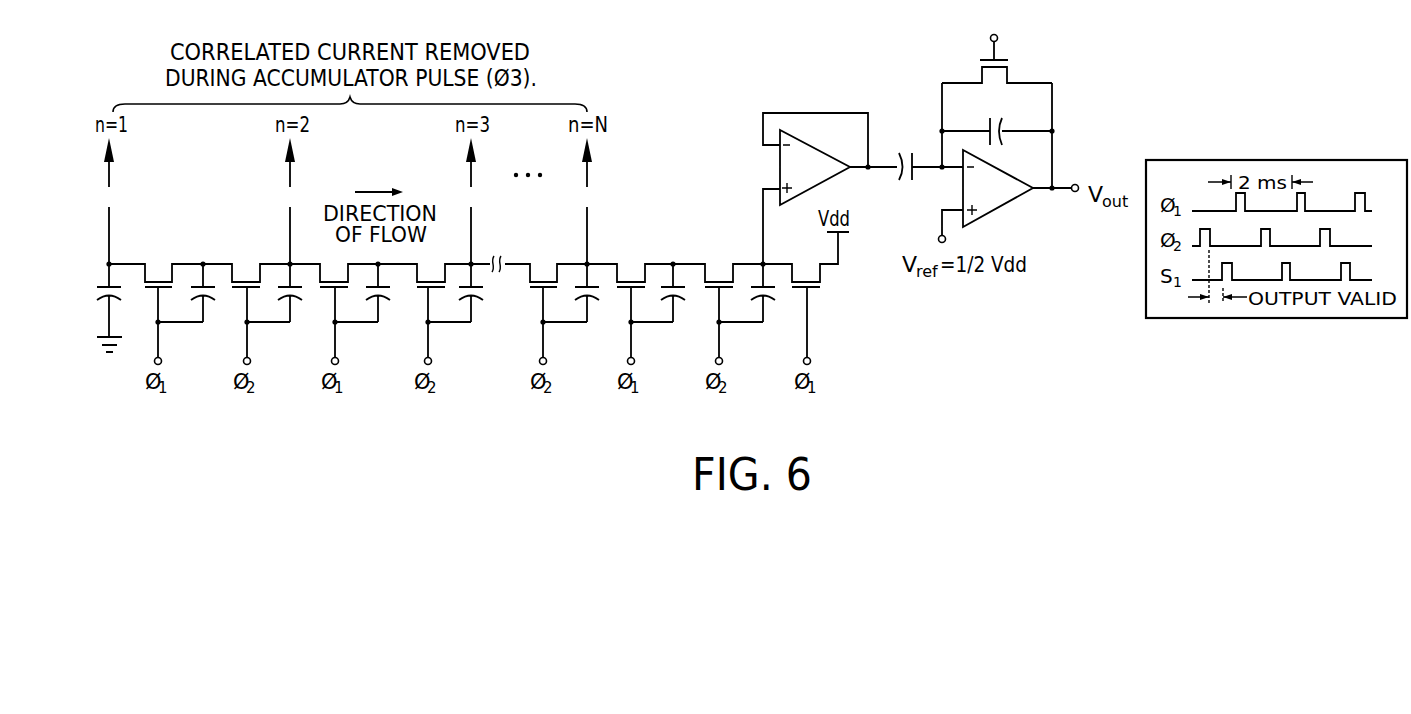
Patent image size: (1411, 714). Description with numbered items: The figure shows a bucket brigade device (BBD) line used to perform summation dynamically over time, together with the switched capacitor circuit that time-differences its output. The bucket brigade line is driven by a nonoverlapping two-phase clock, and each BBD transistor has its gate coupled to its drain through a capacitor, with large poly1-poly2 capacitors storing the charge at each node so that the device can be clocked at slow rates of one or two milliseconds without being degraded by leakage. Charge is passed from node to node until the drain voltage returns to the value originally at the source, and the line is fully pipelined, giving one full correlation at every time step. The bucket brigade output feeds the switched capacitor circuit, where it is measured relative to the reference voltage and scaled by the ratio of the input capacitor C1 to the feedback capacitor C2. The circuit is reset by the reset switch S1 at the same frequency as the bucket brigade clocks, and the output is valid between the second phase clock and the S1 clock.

The input capacitor C1 is at (920, 187).
The feedback capacitor C2 is at (996, 126).
The reset switch S1 is at (997, 46).